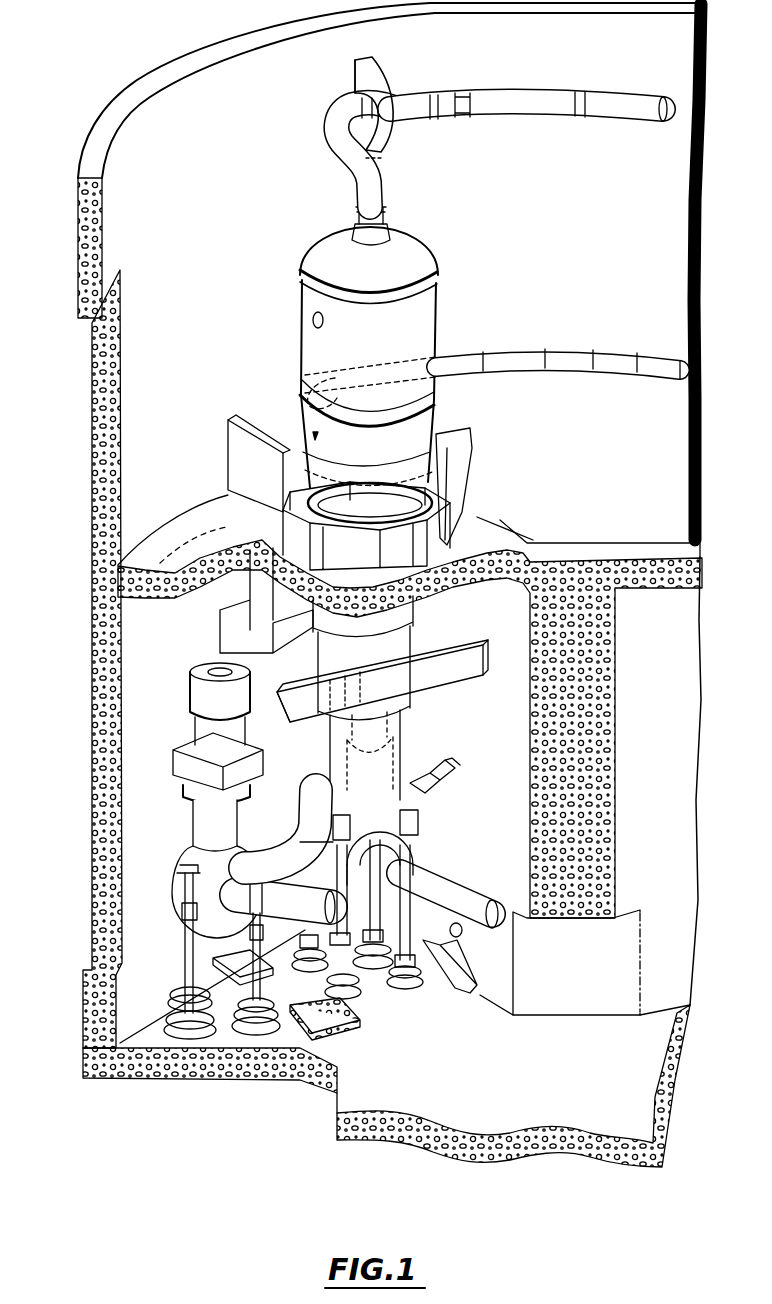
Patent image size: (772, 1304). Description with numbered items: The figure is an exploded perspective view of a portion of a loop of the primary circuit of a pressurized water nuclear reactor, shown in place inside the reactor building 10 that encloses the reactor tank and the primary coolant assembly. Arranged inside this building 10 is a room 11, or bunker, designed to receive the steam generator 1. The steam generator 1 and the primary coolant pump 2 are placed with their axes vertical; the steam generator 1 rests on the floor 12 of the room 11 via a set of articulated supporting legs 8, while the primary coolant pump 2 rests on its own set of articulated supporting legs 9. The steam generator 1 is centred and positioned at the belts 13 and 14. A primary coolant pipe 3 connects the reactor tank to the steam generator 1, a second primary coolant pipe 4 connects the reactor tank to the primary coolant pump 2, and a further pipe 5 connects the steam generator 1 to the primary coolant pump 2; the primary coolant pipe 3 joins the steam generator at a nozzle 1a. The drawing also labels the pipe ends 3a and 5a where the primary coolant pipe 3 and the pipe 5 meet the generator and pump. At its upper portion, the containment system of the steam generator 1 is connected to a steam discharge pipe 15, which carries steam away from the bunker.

The steam generator 1 is at (442, 325).
The nozzle 1a is at (398, 782).
The primary coolant pump 2 is at (195, 858).
The primary coolant pipe 3 is at (430, 870).
The pipe joint 3a is at (412, 830).
The primary coolant pipe 4 is at (318, 940).
The pipe 5 is at (305, 836).
The pipe joint 5a is at (310, 832).
The articulated supporting legs 8 is at (420, 905).
The articulated supporting legs 9 is at (183, 951).
The reactor building 10 is at (94, 438).
The room 11 is at (149, 650).
The floor 12 is at (368, 1078).
The belt 13 is at (420, 790).
The belt 14 is at (425, 540).
The steam discharge pipe 15 is at (376, 188).